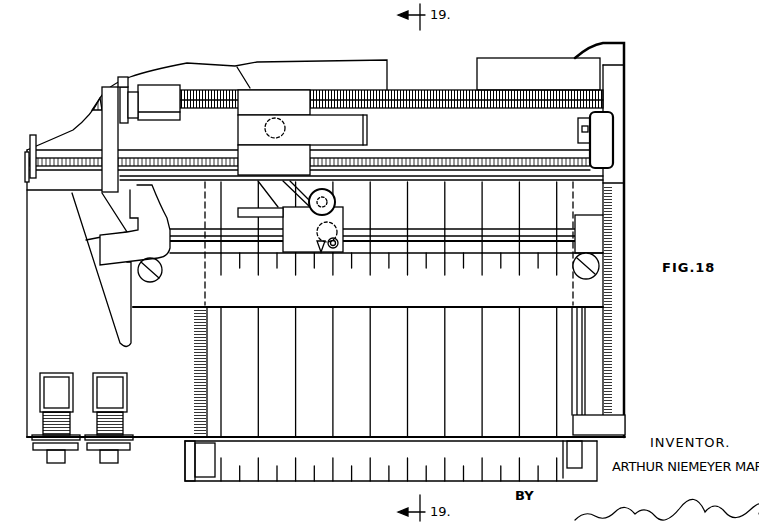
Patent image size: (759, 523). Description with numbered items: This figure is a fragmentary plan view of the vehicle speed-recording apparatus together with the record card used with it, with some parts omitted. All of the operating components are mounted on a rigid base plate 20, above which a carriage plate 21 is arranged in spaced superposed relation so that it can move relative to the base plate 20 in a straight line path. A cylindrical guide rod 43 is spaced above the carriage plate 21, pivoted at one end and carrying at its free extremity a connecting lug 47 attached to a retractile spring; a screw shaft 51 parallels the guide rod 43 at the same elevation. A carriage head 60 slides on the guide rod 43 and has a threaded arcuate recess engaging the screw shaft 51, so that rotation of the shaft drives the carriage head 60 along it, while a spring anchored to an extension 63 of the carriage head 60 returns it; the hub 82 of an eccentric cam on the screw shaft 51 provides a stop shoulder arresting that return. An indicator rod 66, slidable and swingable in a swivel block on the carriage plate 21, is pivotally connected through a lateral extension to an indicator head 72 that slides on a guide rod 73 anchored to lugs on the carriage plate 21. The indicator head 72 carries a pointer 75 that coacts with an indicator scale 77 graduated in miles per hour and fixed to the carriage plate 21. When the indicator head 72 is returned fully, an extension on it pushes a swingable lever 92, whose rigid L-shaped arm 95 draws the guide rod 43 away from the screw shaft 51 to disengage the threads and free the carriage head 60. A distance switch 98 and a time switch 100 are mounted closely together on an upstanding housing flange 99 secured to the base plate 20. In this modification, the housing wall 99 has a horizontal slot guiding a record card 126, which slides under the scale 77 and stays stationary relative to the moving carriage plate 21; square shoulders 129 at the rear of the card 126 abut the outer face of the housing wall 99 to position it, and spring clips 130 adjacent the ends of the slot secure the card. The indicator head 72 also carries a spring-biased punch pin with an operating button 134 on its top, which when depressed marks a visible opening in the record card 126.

The base plate 20 is at (618, 341).
The carriage plate 21 is at (588, 198).
The guide rod 43 is at (448, 157).
The connecting lug 47 is at (30, 146).
The screw shaft 51 is at (422, 96).
The carriage head 60 is at (275, 93).
The extension 63 is at (368, 128).
The indicator arm or rod 66 is at (283, 178).
The indicator head 72 is at (290, 229).
The guide rod 73 is at (447, 228).
The pointer 75 is at (320, 252).
The indicator scale 77 is at (420, 308).
The hub 82 is at (167, 86).
The swingable lever 92 is at (115, 288).
The L-shaped arm 95 is at (157, 218).
The distance on and off switch 98 is at (60, 378).
The housing flange 99 is at (152, 442).
The time on and off switch 100 is at (110, 382).
The record card 126 is at (389, 309).
The square shoulders 129 is at (192, 462).
The spring clips 130 is at (214, 446).
The operating button 134 is at (324, 196).